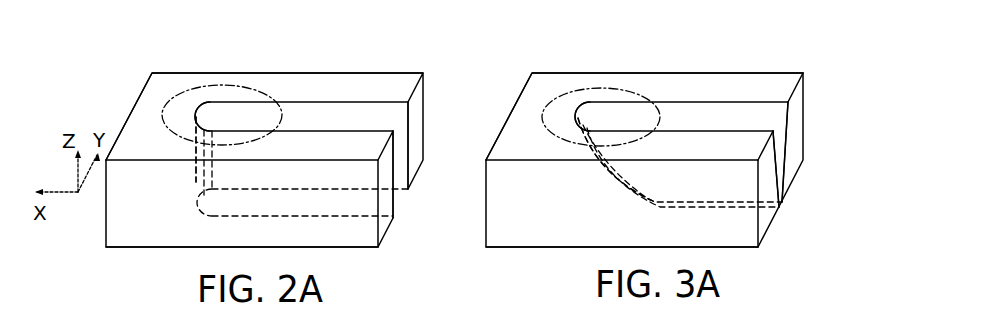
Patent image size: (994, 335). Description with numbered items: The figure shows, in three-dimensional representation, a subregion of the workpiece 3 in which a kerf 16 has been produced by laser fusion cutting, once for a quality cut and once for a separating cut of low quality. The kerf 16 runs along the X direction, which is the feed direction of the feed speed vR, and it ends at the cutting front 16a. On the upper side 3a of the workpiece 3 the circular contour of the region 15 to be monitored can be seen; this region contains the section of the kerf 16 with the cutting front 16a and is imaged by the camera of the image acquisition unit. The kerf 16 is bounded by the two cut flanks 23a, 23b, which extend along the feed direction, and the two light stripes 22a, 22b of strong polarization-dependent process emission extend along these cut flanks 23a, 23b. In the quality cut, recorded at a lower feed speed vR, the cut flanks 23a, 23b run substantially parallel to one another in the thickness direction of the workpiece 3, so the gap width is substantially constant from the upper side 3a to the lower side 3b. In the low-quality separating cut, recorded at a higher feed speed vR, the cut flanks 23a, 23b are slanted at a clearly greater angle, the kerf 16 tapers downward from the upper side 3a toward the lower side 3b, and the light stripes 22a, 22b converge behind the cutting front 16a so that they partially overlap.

In FIG. 2A, the workpiece 3 is at (365, 87).
In FIG. 3A, the workpiece 3 is at (735, 90).
In FIG. 2A, the upper side of the workpiece 3a is at (157, 95).
In FIG. 3A, the upper side of the workpiece 3a is at (537, 100).
In FIG. 2A, the lower side of the workpiece 3b is at (352, 238).
In FIG. 3A, the lower side of the workpiece 3b is at (733, 237).
In FIG. 2A, the region of the workpiece to be monitored 15 is at (222, 85).
In FIG. 3A, the region of the workpiece to be monitored 15 is at (603, 87).
In FIG. 2A, the kerf 16 is at (330, 115).
In FIG. 3A, the kerf 16 is at (708, 115).
In FIG. 2A, the cutting front 16a is at (200, 181).
In FIG. 3A, the cutting front 16a is at (602, 182).
In FIG. 2A, the light stripe 22a is at (197, 116).
In FIG. 3A, the light stripe 22a is at (579, 117).
In FIG. 2A, the light stripe 22b is at (200, 147).
In FIG. 3A, the light stripe 22b is at (583, 145).
In FIG. 2A, the cut flank 23a is at (402, 142).
In FIG. 3A, the cut flank 23a is at (787, 118).
In FIG. 2A, the cut flank 23b is at (393, 178).
In FIG. 3A, the cut flank 23b is at (777, 175).
In FIG. 2A, the feed speed VR is at (280, 67).
In FIG. 3A, the feed speed VR is at (662, 68).